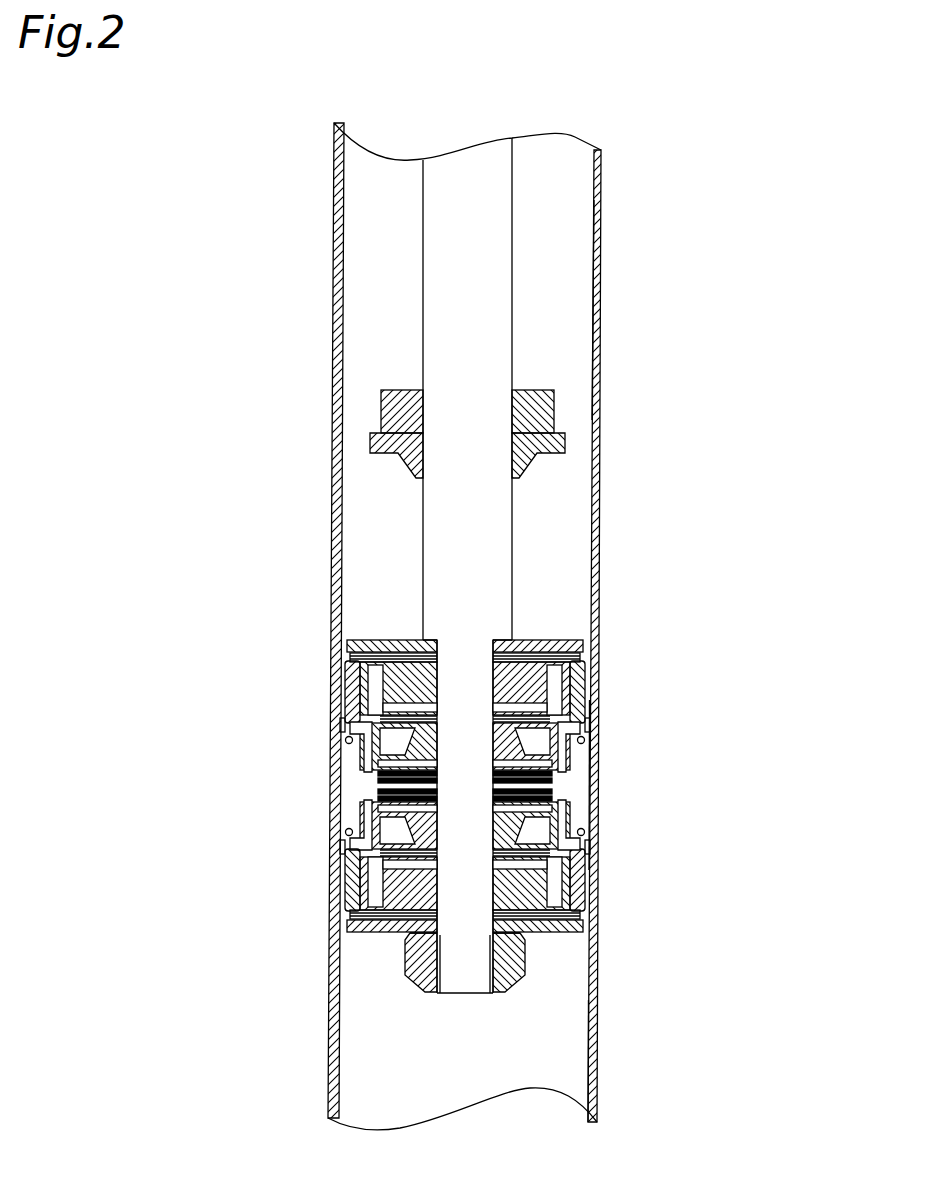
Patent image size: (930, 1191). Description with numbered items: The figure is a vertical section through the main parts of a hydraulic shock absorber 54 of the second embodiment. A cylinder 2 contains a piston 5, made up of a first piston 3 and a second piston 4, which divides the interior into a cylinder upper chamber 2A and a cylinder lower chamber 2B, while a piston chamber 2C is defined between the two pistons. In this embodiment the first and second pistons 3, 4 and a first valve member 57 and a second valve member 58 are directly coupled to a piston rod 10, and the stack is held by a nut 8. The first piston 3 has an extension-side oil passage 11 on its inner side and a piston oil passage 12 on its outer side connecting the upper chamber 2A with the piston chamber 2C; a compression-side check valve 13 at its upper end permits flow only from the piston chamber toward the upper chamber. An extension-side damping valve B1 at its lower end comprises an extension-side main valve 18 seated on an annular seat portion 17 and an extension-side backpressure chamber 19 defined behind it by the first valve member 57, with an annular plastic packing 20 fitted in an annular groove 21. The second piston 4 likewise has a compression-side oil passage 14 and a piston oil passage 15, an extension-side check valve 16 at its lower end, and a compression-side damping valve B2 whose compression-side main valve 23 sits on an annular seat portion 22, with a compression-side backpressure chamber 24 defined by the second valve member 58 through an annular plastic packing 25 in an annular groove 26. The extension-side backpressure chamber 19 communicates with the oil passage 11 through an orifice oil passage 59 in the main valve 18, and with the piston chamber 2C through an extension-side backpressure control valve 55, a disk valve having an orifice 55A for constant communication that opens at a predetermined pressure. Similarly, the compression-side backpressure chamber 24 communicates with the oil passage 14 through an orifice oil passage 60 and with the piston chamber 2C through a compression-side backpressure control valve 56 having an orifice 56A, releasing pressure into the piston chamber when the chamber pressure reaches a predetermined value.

The cylinder 2 is at (599, 184).
The cylinder upper chamber 2A is at (572, 300).
The cylinder lower chamber 2B is at (583, 1060).
The piston chamber 2C is at (590, 768).
The first piston 3 is at (603, 690).
The second piston 4 is at (595, 905).
The piston 5 is at (785, 727).
The nut 8 is at (502, 996).
The piston rod 10 is at (471, 158).
The extension-side oil passage 11 is at (349, 661).
The piston oil passage 12 is at (347, 690).
The compression-side check valve 13 is at (356, 647).
The compression-side oil passage 14 is at (556, 930).
The piston oil passage 15 is at (592, 925).
The extension-side check valve 16 is at (578, 933).
The annular seat portion 17 is at (365, 705).
The extension-side main valve 18 is at (347, 735).
The extension-side backpressure chamber 19 is at (345, 745).
The annular plastic packing 20 is at (580, 673).
The annular groove 21 is at (585, 707).
The annular seat portion 22 is at (595, 870).
The compression-side main valve 23 is at (595, 858).
The compression-side backpressure chamber 24 is at (590, 850).
The annular plastic packing 25 is at (347, 852).
The annular groove 26 is at (347, 822).
The hydraulic shock absorber 54 is at (683, 212).
The extension-side backpressure control valve 55 is at (370, 790).
The orifice 55A is at (370, 772).
The compression-side backpressure control valve 56 is at (578, 778).
The orifice 56A is at (582, 797).
The first valve member 57 is at (590, 745).
The second valve member 58 is at (583, 815).
The orifice oil passage 59 is at (356, 680).
The orifice oil passage 60 is at (590, 898).
The extension-side damping valve B1 is at (341, 725).
The compression-side damping valve B2 is at (340, 862).